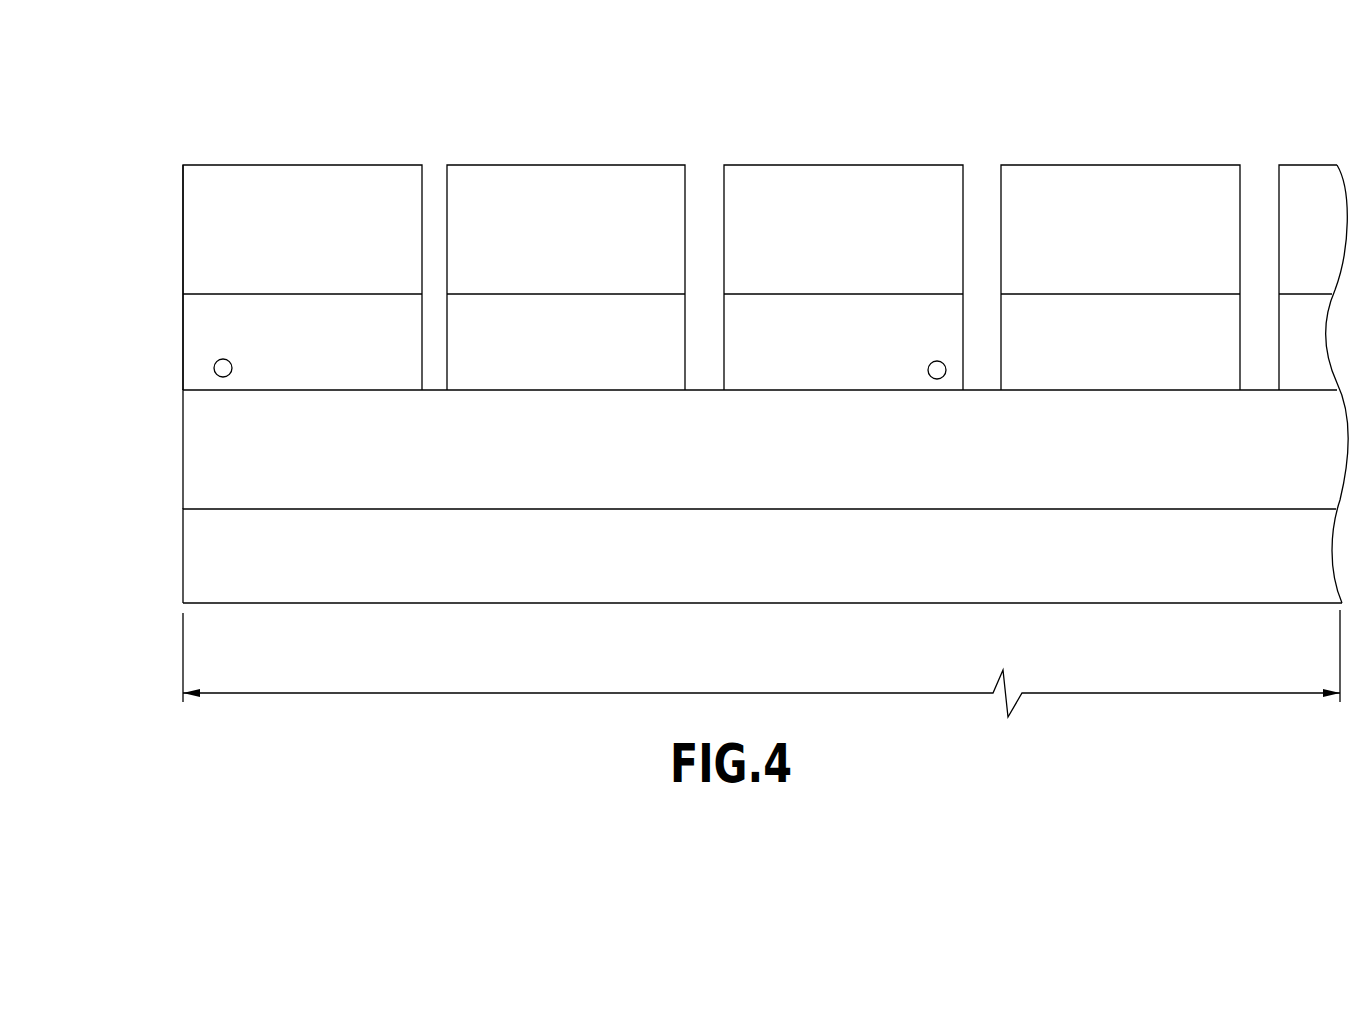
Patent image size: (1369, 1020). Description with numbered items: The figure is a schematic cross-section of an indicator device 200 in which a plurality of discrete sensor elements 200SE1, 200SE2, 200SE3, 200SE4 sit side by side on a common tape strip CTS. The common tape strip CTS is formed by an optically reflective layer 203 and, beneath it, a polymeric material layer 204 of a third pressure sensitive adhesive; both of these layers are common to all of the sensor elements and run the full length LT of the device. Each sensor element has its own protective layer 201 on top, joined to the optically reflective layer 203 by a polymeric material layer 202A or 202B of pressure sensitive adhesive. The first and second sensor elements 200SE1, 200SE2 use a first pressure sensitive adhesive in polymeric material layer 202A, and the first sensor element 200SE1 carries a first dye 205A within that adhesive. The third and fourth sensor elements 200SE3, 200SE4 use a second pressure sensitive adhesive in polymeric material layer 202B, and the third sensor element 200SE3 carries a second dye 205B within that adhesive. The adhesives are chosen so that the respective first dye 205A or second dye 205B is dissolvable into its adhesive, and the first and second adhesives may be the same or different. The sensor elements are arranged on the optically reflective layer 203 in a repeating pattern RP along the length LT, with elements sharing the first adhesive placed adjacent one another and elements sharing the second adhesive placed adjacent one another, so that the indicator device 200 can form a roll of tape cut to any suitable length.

The repeating pattern RP is at (130, 132).
The indicator device 200 is at (152, 742).
The first sensor element 200SE1 is at (278, 105).
The second sensor element 200SE2 is at (540, 106).
The third sensor element 200SE3 is at (818, 104).
The fourth sensor element 200SE4 is at (1094, 106).
The protective layer 201 is at (193, 223).
The polymeric material layer 202A is at (193, 317).
The polymeric material layer 202B is at (947, 315).
The optically reflective layer 203 is at (193, 487).
The polymeric material layer 204 is at (193, 560).
The first dye 205A is at (215, 375).
The second dye 205B is at (945, 378).
The common tape strip CTS is at (148, 594).
The length LT is at (645, 692).